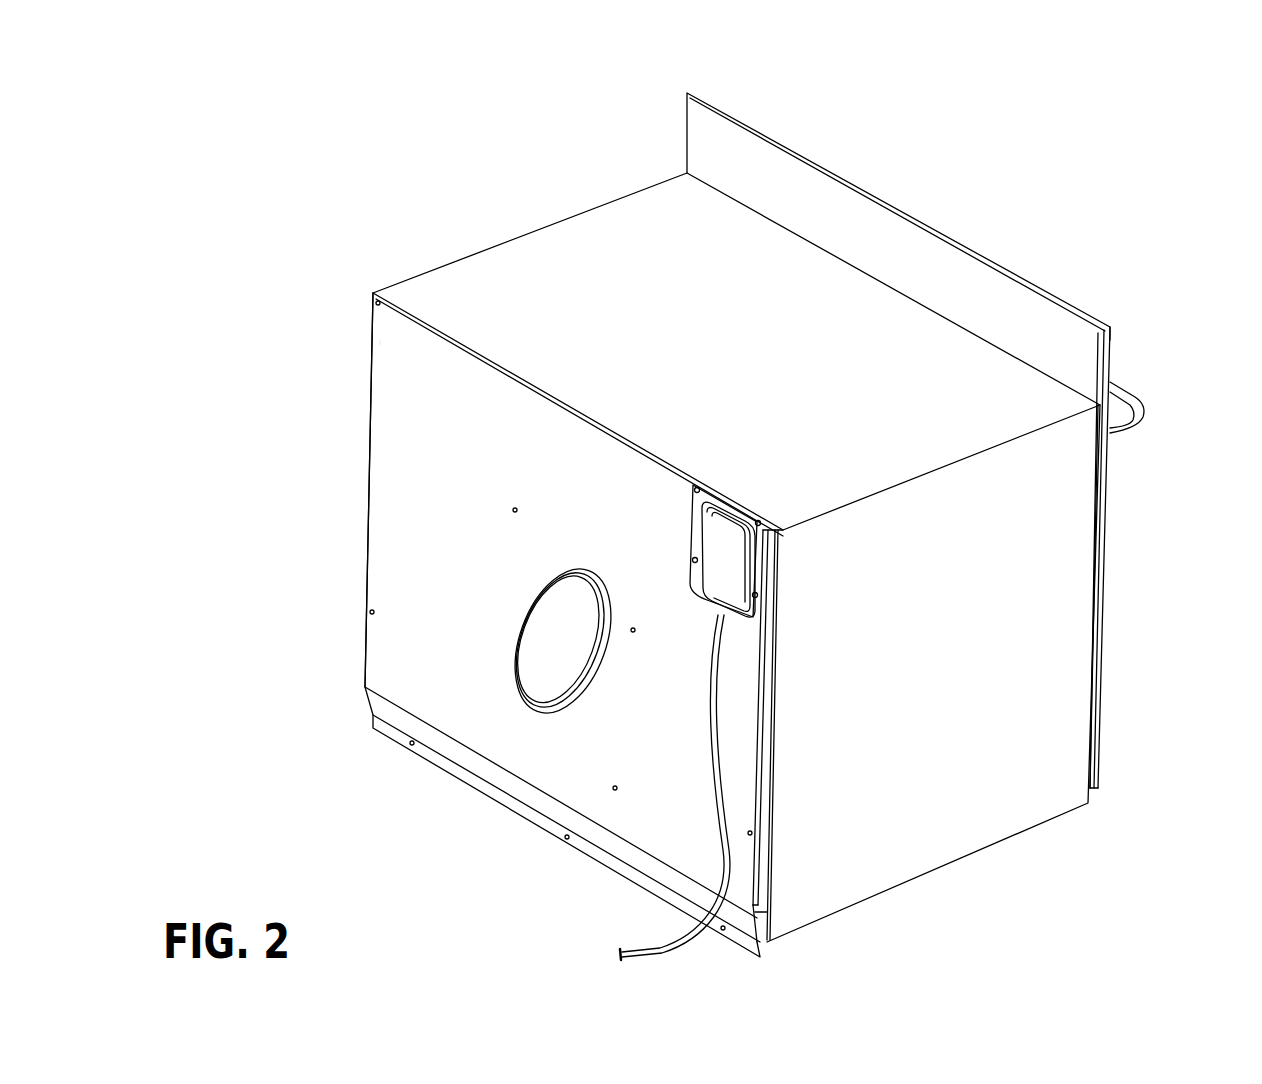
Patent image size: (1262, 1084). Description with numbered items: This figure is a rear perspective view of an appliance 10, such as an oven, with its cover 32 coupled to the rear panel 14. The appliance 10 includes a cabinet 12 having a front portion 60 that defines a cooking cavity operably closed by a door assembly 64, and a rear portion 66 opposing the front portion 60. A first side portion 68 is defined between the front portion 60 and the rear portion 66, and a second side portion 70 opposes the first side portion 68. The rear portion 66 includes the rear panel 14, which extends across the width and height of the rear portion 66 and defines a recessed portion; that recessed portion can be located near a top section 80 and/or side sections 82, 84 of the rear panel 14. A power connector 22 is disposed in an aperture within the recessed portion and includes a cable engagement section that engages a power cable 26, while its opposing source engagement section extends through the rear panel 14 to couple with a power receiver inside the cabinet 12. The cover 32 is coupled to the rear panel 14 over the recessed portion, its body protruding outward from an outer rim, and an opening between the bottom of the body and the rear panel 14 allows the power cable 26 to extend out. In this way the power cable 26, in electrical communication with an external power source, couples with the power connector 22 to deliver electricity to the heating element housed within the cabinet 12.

The appliance 10 is at (1020, 114).
The cabinet 12 is at (560, 217).
The rear panel 14 is at (398, 386).
The power connector 22 is at (718, 490).
The power cable 26 is at (650, 948).
The cover 32 is at (720, 553).
The front portion 60 is at (1107, 497).
The door assembly 64 is at (1138, 392).
The rear portion 66 is at (405, 450).
The first side portion 68 is at (1047, 587).
The second side portion 70 is at (368, 508).
The top section 80 is at (480, 355).
The side section 82 is at (368, 598).
The side section 84 is at (755, 860).